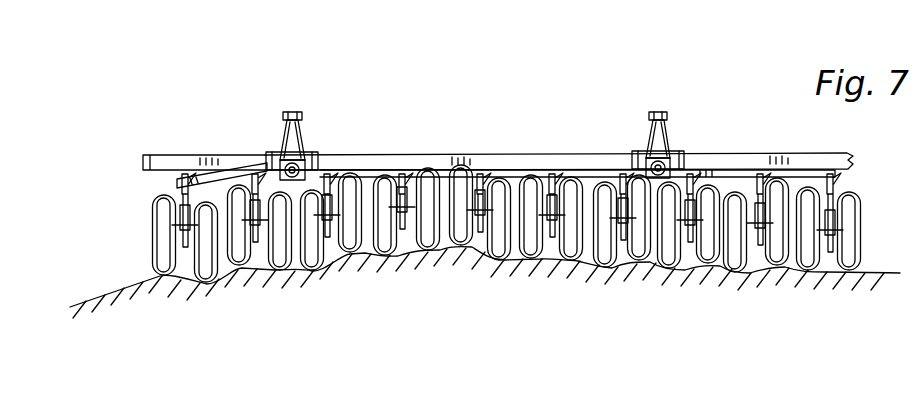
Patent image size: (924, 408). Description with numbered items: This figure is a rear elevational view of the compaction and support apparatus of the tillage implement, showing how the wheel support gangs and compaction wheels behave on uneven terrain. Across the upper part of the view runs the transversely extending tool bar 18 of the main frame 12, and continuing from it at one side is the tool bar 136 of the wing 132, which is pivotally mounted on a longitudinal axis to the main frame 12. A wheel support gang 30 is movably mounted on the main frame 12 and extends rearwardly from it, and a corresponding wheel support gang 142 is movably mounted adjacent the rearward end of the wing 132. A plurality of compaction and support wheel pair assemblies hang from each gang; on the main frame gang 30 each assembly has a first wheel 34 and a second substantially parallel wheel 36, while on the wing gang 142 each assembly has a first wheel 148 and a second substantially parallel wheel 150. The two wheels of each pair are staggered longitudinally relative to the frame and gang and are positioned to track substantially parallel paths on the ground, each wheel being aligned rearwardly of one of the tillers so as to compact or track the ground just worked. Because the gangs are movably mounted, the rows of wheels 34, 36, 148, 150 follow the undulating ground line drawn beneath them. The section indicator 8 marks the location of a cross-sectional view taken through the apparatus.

The main frame 12 is at (603, 156).
The tool bar 18 is at (800, 160).
The wheel support gang 30 is at (735, 162).
The first wheel 34 is at (501, 180).
The second wheel 36 is at (465, 168).
The wing 132 is at (188, 155).
The tool bar 136 is at (160, 172).
The wheel support gang 142 is at (341, 167).
The first wheel 148 is at (212, 286).
The second wheel 150 is at (160, 251).
The section line 8- 8 is at (208, 87).